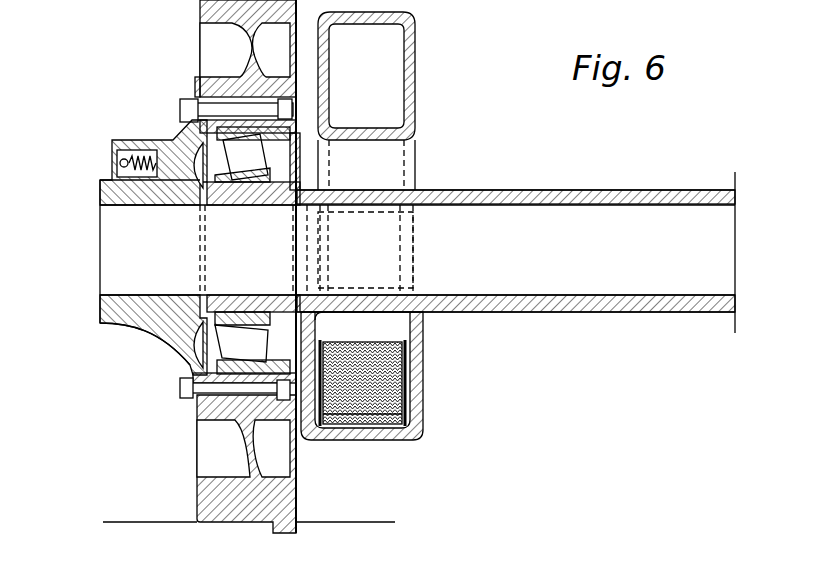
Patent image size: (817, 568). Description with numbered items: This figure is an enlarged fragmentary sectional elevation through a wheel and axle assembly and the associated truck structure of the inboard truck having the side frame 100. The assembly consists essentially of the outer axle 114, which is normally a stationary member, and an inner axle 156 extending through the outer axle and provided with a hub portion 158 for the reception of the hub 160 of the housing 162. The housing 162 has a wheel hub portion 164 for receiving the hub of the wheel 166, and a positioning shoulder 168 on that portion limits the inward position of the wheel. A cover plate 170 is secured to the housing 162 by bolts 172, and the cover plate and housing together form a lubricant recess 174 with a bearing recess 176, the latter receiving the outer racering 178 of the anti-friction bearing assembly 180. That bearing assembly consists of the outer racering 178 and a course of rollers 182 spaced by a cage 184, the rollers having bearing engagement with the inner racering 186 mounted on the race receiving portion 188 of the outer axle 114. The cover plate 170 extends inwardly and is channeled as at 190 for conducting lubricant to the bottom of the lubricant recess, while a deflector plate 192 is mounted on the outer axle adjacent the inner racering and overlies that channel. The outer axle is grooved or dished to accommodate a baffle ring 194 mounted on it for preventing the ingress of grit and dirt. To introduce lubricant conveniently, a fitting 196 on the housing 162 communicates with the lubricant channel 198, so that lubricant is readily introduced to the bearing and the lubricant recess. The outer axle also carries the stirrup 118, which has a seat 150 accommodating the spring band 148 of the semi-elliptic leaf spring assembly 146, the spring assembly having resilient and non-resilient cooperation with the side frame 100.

The side frame 100 is at (417, 77).
The outer axle 114 is at (510, 190).
The stirrup 118 is at (423, 375).
The semi-elliptic leaf spring assembly 146 is at (372, 395).
The spring band 148 is at (362, 425).
The seat 150 is at (400, 437).
The inner axle 156 is at (616, 222).
The hub portion 158 is at (115, 268).
The hub 160 is at (121, 318).
The housing 162 is at (160, 327).
The wheel hub portion 164 is at (197, 423).
The wheel 166 is at (197, 82).
The positioning shoulder 168 is at (287, 427).
The cover plate 170 is at (297, 143).
The bolts 172 is at (290, 107).
The lubricant recess 174 is at (187, 143).
The bearing recess 176 is at (180, 388).
The outer racering 178 is at (237, 427).
The anti-friction bearing assembly 180 is at (250, 157).
The rollers 182 is at (230, 325).
The cage 184 is at (213, 360).
The inner racering 186 is at (247, 187).
The race receiving portion 188 is at (247, 310).
The channel 190 is at (293, 167).
The deflector plate 192 is at (318, 333).
The baffle ring 194 is at (318, 290).
The fitting 196 is at (113, 162).
The lubricant channel 198 is at (182, 178).